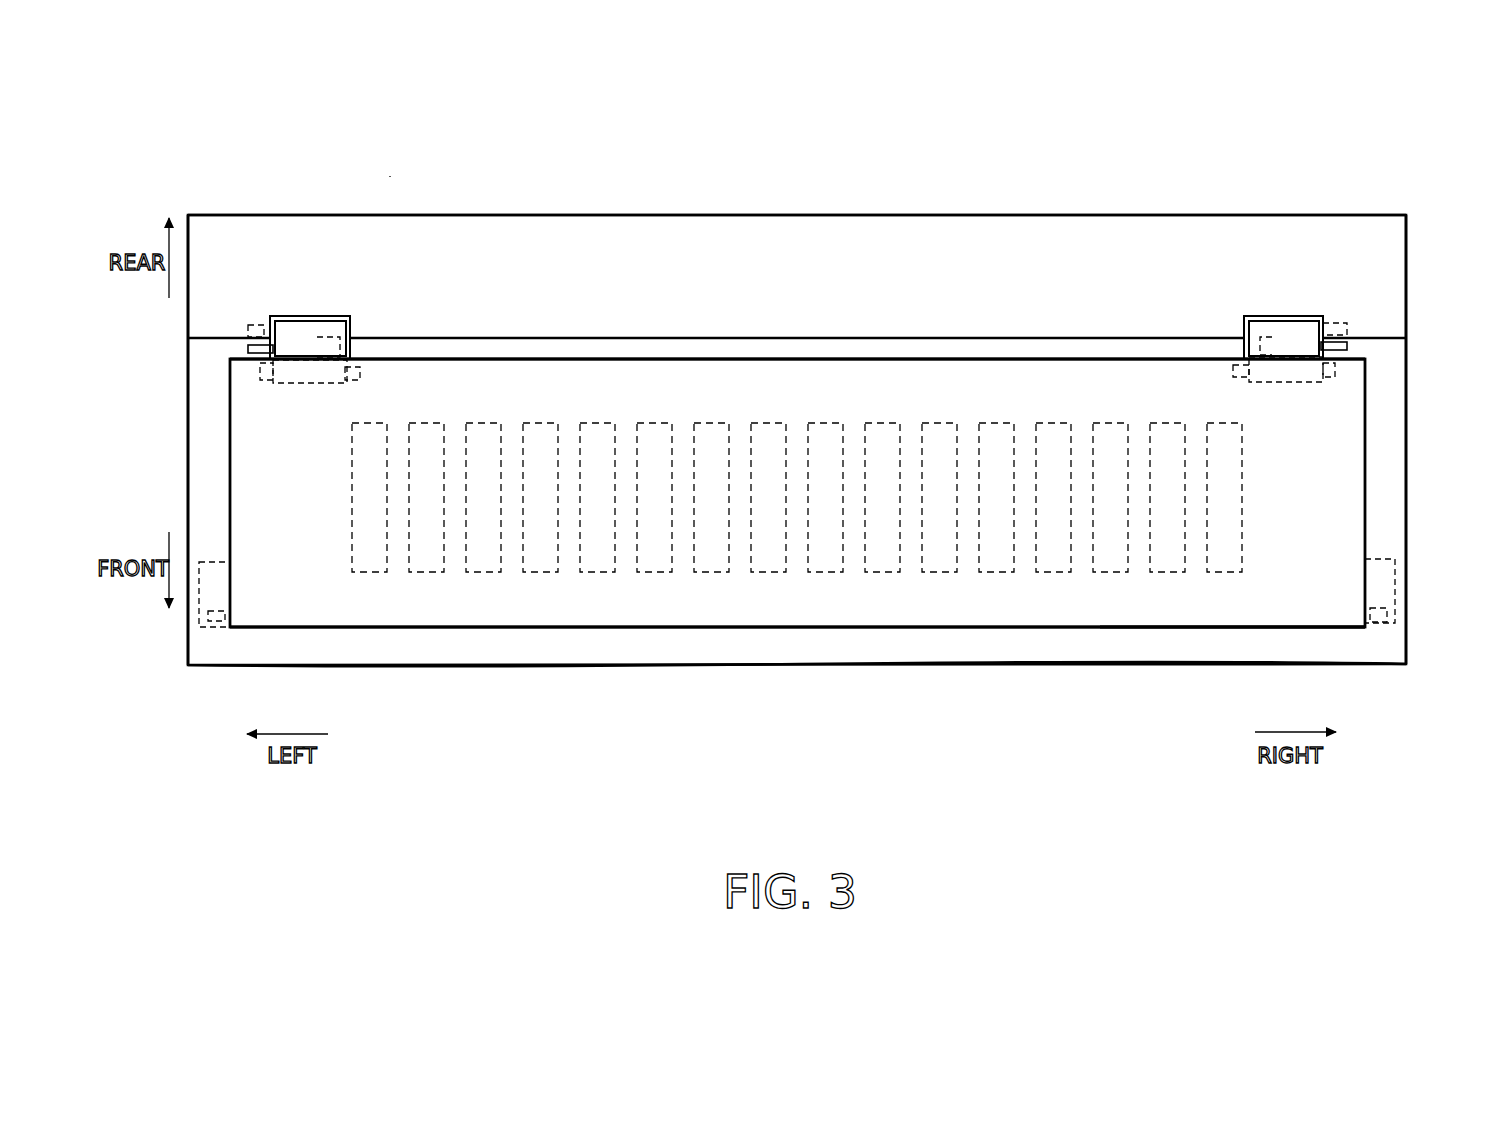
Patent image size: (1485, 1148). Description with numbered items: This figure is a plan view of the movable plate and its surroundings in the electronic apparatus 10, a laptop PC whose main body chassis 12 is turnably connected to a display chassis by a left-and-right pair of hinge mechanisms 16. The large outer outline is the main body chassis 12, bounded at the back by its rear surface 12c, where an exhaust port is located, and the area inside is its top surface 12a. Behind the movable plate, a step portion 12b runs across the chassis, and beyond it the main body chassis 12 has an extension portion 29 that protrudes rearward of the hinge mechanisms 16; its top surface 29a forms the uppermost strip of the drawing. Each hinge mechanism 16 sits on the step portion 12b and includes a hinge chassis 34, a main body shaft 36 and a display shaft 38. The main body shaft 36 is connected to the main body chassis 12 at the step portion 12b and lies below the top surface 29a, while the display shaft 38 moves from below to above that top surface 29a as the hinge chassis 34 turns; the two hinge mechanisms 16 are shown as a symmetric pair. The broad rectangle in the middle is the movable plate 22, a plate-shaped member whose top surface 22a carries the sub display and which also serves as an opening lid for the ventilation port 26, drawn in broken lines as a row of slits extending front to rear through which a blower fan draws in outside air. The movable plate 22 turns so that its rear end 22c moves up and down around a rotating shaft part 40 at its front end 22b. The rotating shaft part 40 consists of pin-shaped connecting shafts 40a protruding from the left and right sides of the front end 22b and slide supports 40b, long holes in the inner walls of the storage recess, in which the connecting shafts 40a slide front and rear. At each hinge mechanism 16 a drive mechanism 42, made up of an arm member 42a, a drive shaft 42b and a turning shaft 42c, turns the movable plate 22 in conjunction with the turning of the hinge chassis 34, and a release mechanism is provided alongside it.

The electronic apparatus 10 is at (190, 118).
The main body chassis 12 is at (186, 497).
The top surface 12a is at (445, 656).
The step portion 12b is at (526, 344).
The rear surface 12c is at (902, 213).
The hinge mechanism 16 is at (334, 316).
The movable plate 22 is at (880, 630).
The top surface 22a is at (575, 604).
The front end 22b is at (1053, 628).
The rear end 22c is at (1004, 358).
The ventilation port 26 is at (764, 582).
The extension portion 29 is at (700, 213).
The top surface 29a is at (610, 253).
The hinge chassis 34 is at (300, 342).
The main body shaft 36 is at (259, 324).
The display shaft 38 is at (248, 350).
The rotating shaft part 40 is at (255, 803).
The connecting shaft 40a is at (219, 621).
The slide support 40b is at (195, 612).
The drive mechanism 42 is at (358, 348).
The arm member 42a is at (335, 380).
The drive shaft 42b is at (264, 370).
The turning shaft 42c is at (318, 328).